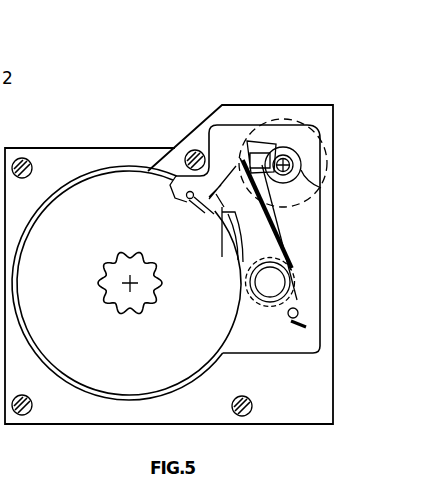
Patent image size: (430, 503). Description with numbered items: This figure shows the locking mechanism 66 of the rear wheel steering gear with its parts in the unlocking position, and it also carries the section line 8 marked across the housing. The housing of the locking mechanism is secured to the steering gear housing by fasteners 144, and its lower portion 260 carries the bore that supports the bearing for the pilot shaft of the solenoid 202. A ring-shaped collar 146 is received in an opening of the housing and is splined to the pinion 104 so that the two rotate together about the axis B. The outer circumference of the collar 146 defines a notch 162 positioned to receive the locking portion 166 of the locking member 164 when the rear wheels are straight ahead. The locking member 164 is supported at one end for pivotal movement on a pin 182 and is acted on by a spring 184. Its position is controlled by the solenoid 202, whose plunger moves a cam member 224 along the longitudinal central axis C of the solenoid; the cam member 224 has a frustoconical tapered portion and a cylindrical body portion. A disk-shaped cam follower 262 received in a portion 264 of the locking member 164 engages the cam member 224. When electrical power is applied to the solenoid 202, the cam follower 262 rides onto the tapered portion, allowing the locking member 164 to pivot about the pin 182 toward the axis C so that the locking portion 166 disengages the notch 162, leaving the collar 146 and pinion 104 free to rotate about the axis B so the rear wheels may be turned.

The section line 8- 8 is at (178, 162).
The locking mechanism 66 is at (325, 72).
The pinion 104 is at (113, 284).
The fasteners 144 is at (23, 158).
The collar 146 is at (50, 310).
The notch 162 is at (188, 200).
The locking member 164 is at (293, 244).
The locking portion 166 is at (229, 242).
The pin 182 is at (275, 283).
The spring 184 is at (283, 219).
The solenoid 202 is at (303, 117).
The cam member 224 is at (323, 178).
The lower portion of the housing 260 is at (297, 388).
The cam follower 262 is at (262, 133).
The portion of the locking member 264 is at (247, 143).
The axis B is at (134, 277).
The axis C is at (284, 160).